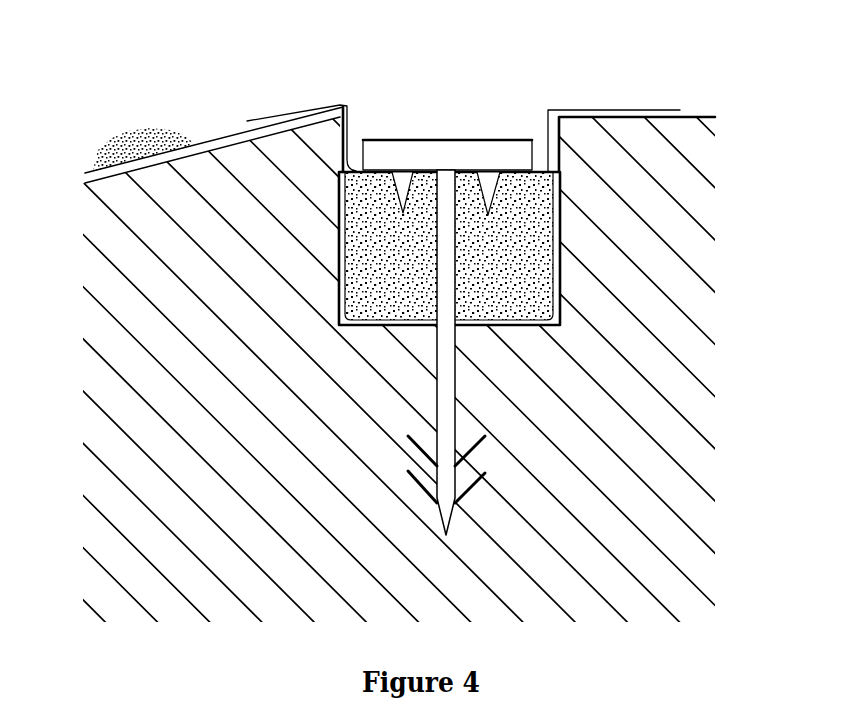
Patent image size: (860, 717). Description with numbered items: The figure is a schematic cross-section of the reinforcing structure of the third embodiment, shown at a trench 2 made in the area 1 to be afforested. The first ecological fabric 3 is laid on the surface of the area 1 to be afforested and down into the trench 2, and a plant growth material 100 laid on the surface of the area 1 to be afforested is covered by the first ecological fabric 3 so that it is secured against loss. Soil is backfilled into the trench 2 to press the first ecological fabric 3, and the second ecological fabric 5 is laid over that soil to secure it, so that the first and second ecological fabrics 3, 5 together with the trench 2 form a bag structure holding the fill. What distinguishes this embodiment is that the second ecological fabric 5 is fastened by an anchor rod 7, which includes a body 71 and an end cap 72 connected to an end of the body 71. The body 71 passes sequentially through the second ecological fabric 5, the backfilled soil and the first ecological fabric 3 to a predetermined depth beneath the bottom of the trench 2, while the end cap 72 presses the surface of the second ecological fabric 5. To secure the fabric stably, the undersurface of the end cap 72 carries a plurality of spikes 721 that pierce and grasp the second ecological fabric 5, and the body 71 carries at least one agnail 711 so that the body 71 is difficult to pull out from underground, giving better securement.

The area to be afforested 1 is at (158, 165).
The plant growth material 100 is at (118, 135).
The first ecological fabric 3 is at (212, 135).
The second ecological fabric 5 is at (560, 140).
The trench 2 is at (560, 260).
The anchor rod 7 is at (589, 275).
The end cap 72 is at (449, 147).
The body 71 is at (455, 383).
The agnail 711 is at (472, 492).
The spikes 721 is at (495, 198).